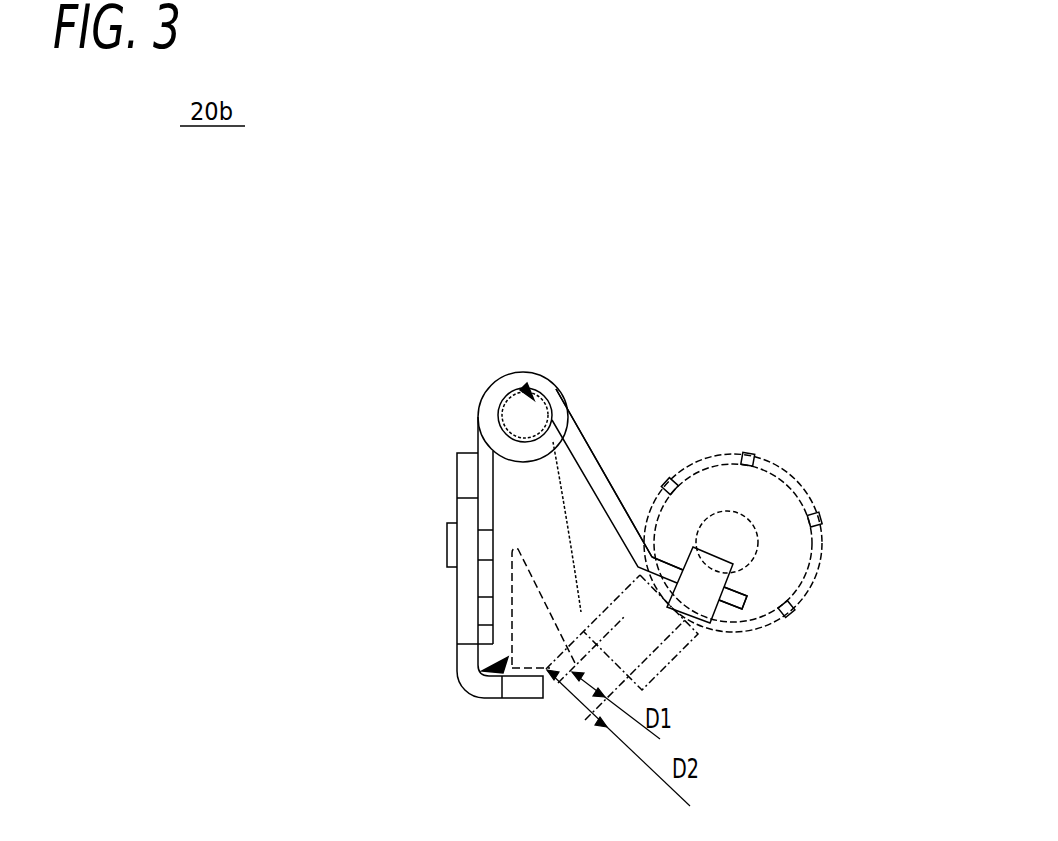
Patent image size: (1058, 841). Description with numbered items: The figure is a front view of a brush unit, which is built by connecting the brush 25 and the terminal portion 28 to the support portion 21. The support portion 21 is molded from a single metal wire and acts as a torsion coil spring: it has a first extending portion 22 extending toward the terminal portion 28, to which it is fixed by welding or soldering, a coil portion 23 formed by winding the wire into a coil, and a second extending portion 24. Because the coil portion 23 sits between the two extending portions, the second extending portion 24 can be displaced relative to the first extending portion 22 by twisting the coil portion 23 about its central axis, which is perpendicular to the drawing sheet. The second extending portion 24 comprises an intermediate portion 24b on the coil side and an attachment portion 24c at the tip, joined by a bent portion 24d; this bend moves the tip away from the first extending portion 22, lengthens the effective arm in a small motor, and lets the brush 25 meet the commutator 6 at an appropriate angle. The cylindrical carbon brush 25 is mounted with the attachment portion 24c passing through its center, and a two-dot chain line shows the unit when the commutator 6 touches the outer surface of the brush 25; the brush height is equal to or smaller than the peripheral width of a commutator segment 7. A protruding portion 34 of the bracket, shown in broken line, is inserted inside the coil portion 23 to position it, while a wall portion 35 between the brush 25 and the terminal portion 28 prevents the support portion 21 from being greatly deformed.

The support portion 21 is at (460, 427).
The first extending portion 22 is at (483, 481).
The coil portion 23 is at (492, 386).
The second extending portion 24 is at (760, 293).
The intermediate portion 24b is at (585, 608).
The attachment portion 24c is at (740, 606).
The bent portion 24d is at (623, 610).
The brush 25 is at (708, 630).
The terminal portion 28 is at (458, 595).
The protruding portion 34 is at (523, 374).
The wall portion 35 is at (485, 703).
The commutator 6 is at (821, 507).
The commutator segment 7 is at (795, 578).